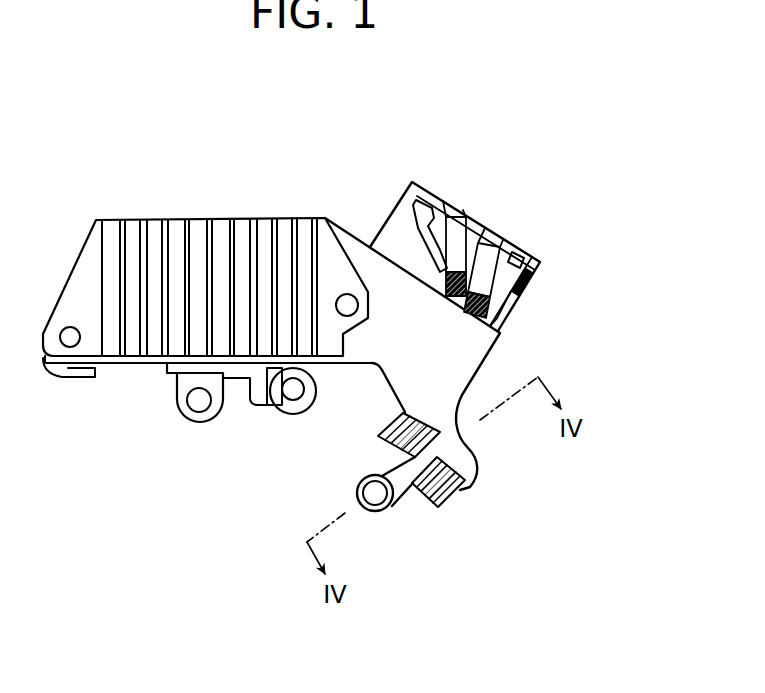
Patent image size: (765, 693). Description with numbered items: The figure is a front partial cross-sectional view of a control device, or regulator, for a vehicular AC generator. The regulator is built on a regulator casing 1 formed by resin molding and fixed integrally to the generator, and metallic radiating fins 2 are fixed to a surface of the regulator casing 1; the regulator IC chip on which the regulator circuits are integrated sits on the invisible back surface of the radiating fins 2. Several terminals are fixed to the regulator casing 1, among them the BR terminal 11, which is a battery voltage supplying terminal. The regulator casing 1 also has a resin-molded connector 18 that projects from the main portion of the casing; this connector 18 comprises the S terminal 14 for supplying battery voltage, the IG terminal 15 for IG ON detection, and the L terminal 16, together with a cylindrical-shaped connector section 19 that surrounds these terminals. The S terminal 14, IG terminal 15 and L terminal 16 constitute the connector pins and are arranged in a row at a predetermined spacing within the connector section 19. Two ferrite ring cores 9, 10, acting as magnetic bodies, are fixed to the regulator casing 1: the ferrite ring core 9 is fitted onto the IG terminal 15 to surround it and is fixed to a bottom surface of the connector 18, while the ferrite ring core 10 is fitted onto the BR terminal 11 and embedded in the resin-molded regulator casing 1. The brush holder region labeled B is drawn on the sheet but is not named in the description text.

The regulator casing 1 is at (494, 349).
The radiating fins 2 is at (110, 222).
The ferrite ring core 9 is at (507, 316).
The ferrite ring core 10 is at (457, 497).
The BR terminal 11 is at (380, 512).
The S terminal 14 is at (433, 202).
The IG terminal 15 is at (510, 241).
The L terminal 16 is at (466, 218).
The connector 18 is at (543, 282).
The connector section 19 is at (540, 250).
The brush holder assembly B is at (554, 114).